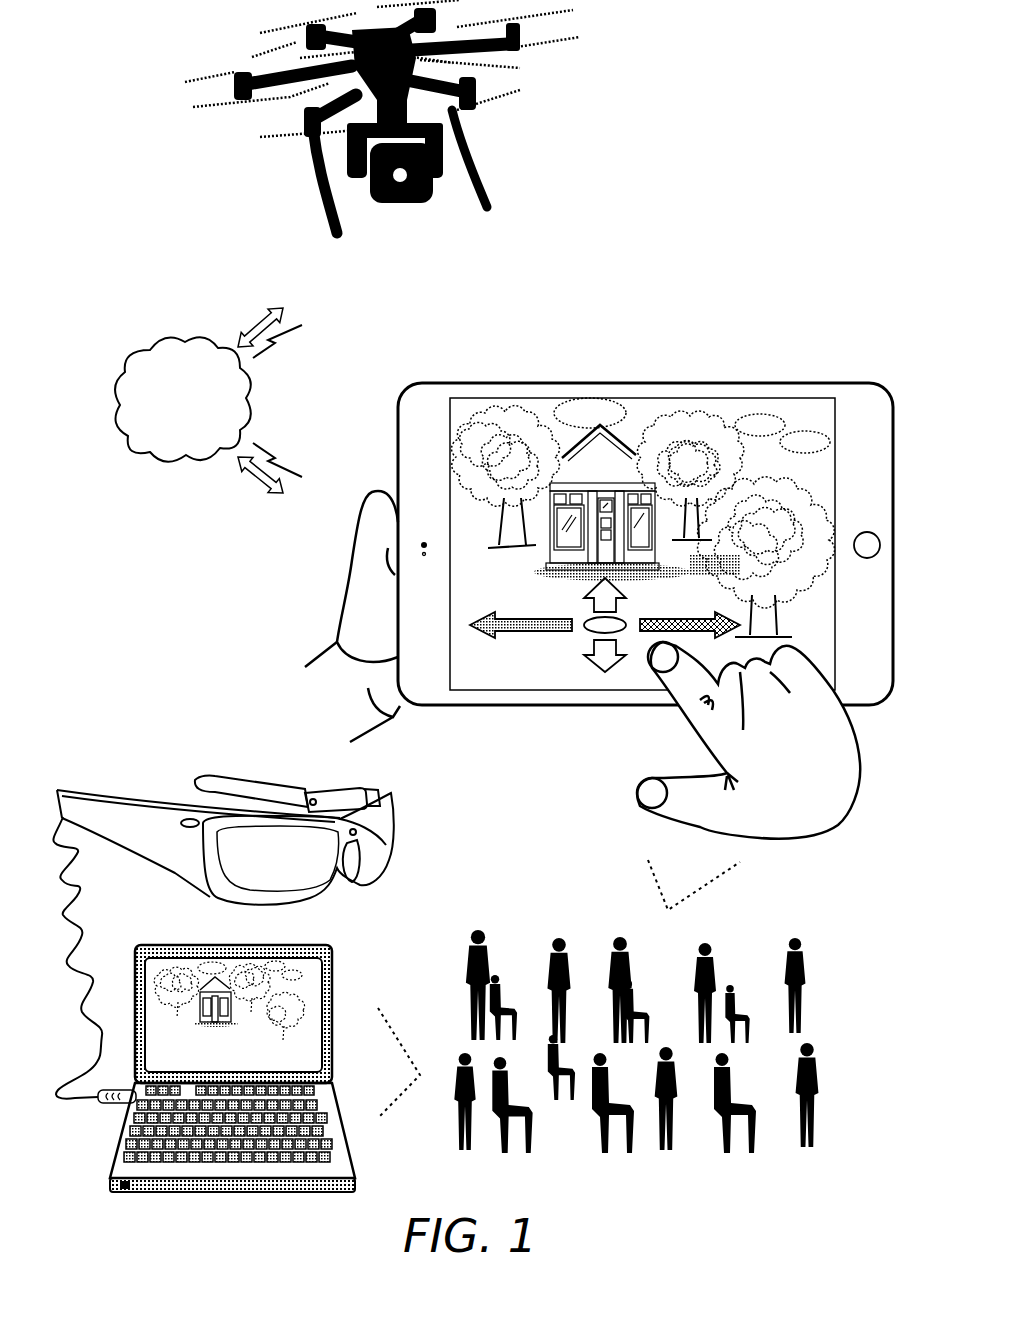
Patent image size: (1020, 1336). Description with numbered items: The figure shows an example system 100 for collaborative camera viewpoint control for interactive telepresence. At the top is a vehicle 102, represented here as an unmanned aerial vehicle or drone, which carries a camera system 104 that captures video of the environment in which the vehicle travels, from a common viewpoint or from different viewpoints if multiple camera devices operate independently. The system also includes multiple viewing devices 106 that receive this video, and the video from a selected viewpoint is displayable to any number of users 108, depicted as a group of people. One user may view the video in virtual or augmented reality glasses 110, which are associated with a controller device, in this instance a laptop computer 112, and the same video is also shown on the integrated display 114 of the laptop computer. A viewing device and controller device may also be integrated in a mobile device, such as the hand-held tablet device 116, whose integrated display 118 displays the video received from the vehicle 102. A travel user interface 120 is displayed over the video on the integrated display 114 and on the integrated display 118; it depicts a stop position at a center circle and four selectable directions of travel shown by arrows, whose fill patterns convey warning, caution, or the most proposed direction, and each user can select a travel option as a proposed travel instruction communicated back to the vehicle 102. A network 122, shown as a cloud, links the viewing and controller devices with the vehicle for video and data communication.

The system 100 is at (683, 122).
The vehicle 102 is at (312, 150).
The camera system 104 is at (400, 180).
The viewing devices 106 is at (225, 638).
The users 108 is at (580, 888).
The virtual or augmented reality glasses 110 is at (180, 808).
The laptop computer 112 is at (243, 1227).
The integrated display 114 is at (195, 965).
The tablet device 116 is at (802, 382).
The integrated display 118 is at (537, 412).
The travel user interface 120 is at (565, 650).
The network 122 is at (200, 430).